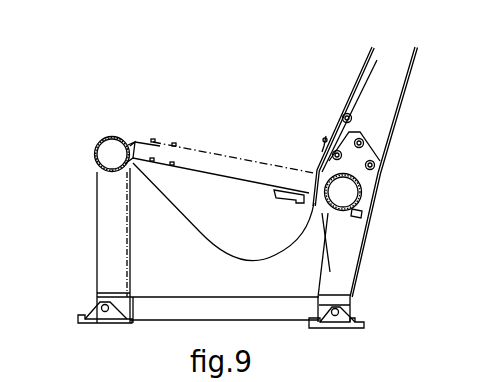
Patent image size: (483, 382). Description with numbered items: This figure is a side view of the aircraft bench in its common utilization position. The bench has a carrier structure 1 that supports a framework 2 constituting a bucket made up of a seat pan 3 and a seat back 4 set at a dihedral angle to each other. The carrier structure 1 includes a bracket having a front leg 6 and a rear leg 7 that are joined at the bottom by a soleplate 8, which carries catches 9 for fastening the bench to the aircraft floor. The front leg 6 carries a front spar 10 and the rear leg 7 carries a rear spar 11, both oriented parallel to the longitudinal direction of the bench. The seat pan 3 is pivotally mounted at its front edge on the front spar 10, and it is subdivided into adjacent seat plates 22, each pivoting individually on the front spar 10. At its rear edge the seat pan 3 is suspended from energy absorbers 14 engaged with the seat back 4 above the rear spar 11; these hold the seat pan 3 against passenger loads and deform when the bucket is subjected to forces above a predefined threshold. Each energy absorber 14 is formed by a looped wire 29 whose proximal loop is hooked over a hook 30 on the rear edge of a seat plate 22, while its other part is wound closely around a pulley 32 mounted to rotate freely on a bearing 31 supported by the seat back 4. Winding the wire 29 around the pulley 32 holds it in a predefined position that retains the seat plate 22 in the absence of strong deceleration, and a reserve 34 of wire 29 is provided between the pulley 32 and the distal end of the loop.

The carrier structure 1 is at (90, 268).
The framework 2 is at (412, 90).
The seat pan 3 is at (197, 137).
The seat back 4 is at (349, 83).
The front leg 6 is at (97, 228).
The rear leg 7 is at (359, 250).
The soleplate 8 is at (207, 297).
The catches 9 is at (100, 324).
The front spar 10 is at (112, 154).
The rear spar 11 is at (344, 196).
The energy absorbers 14 is at (312, 205).
The seat plates 22 is at (238, 156).
The wire 29 is at (328, 138).
The hook 30 is at (282, 204).
The bearing 31 is at (355, 125).
The pulley 32 is at (352, 117).
The reserve 34 is at (372, 82).